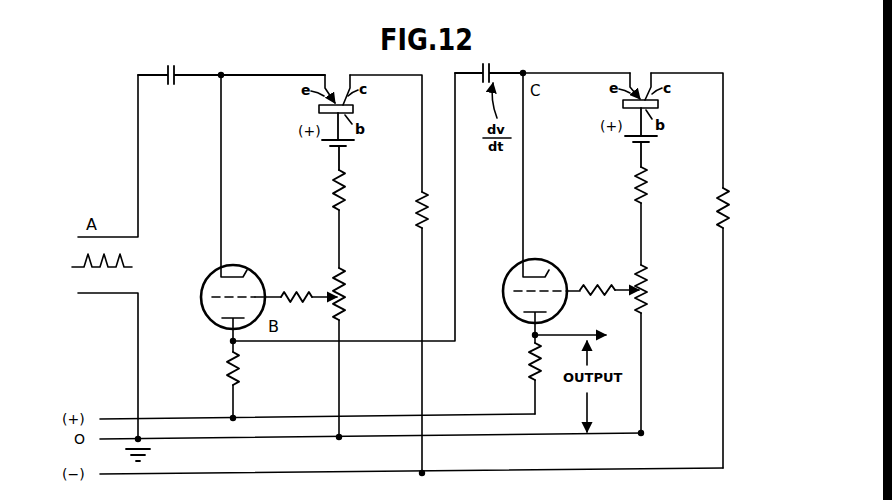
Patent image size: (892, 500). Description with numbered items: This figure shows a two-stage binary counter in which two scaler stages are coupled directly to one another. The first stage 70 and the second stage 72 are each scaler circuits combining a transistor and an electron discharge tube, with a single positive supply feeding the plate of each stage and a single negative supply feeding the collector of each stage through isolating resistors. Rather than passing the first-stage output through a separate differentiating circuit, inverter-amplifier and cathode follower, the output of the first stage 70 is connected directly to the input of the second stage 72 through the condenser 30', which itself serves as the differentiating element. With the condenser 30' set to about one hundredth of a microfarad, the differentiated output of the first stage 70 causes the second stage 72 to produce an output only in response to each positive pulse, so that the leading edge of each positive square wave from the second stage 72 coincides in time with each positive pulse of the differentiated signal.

The first stage 70 is at (291, 271).
The second stage 72 is at (592, 261).
The condenser 30' is at (493, 63).